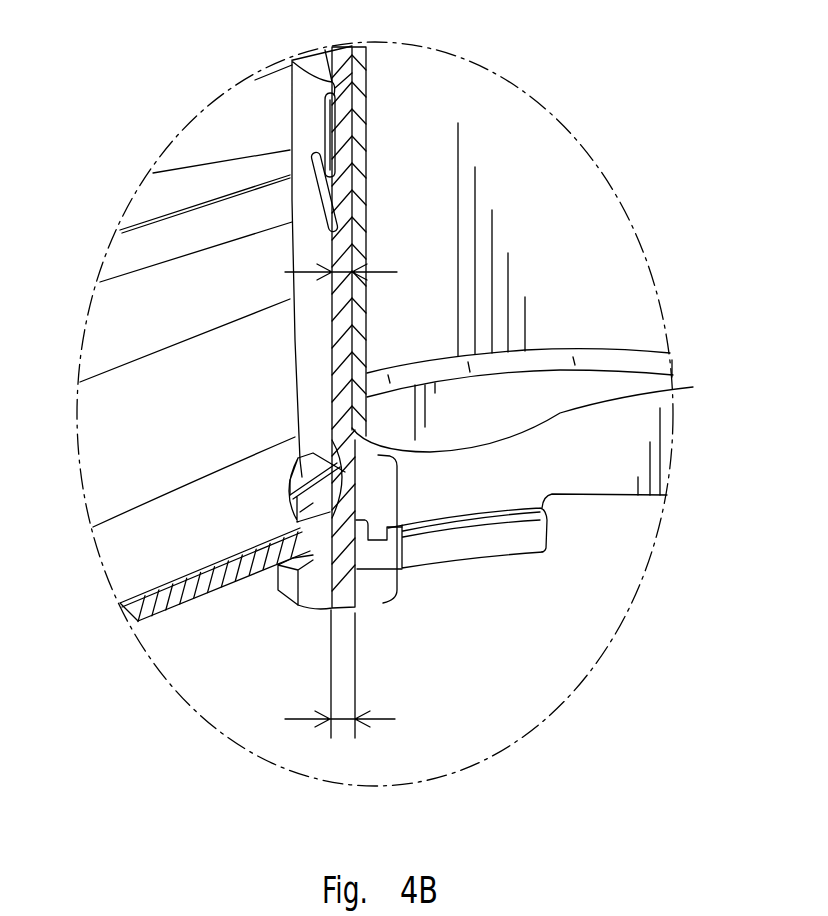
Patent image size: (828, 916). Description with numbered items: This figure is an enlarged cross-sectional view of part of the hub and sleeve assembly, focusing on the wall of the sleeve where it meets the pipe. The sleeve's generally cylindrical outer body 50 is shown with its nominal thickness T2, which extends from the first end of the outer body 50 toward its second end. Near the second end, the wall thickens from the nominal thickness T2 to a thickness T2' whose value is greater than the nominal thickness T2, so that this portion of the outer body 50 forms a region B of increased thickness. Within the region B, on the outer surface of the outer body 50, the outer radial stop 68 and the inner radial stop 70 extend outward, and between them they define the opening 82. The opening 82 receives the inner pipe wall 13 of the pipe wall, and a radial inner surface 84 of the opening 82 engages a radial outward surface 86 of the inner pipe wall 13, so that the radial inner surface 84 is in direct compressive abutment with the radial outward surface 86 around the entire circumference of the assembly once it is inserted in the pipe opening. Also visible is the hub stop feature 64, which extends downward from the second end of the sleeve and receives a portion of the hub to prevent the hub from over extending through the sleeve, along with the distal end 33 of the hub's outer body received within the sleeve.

The outer body 50 is at (303, 127).
The nominal thickness T2 is at (215, 288).
The radial outward surface 86 is at (330, 455).
The outer radial stop 68 is at (295, 478).
The inner pipe wall 13 is at (170, 607).
The inner radial stop 70 is at (287, 587).
The opening 82 is at (310, 602).
The radial inner surface 84 is at (355, 570).
The region of increased thickness B is at (398, 502).
The hub stop feature 64 is at (530, 532).
The distal end 33 is at (537, 287).
The increased thickness T2' is at (408, 674).